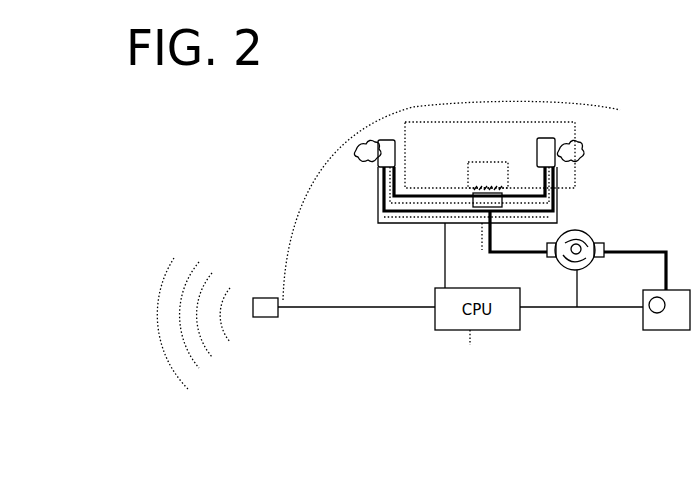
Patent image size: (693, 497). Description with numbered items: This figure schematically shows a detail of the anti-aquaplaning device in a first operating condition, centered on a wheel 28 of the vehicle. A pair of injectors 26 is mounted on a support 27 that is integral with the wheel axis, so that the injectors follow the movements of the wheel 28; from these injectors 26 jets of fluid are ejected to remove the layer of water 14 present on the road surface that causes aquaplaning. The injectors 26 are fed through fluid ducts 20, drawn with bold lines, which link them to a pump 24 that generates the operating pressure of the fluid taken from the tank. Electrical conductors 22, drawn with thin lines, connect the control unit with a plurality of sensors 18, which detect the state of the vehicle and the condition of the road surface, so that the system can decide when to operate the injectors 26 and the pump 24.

The layer of water 14 is at (355, 0).
The sensors 18 is at (263, 317).
The fluid ducts 20 is at (645, 0).
The electrical conductors 22 is at (390, 222).
The pump 24 is at (592, 237).
The injectors 26 is at (412, 0).
The support 27 is at (490, 198).
The wheel 28 is at (485, 0).